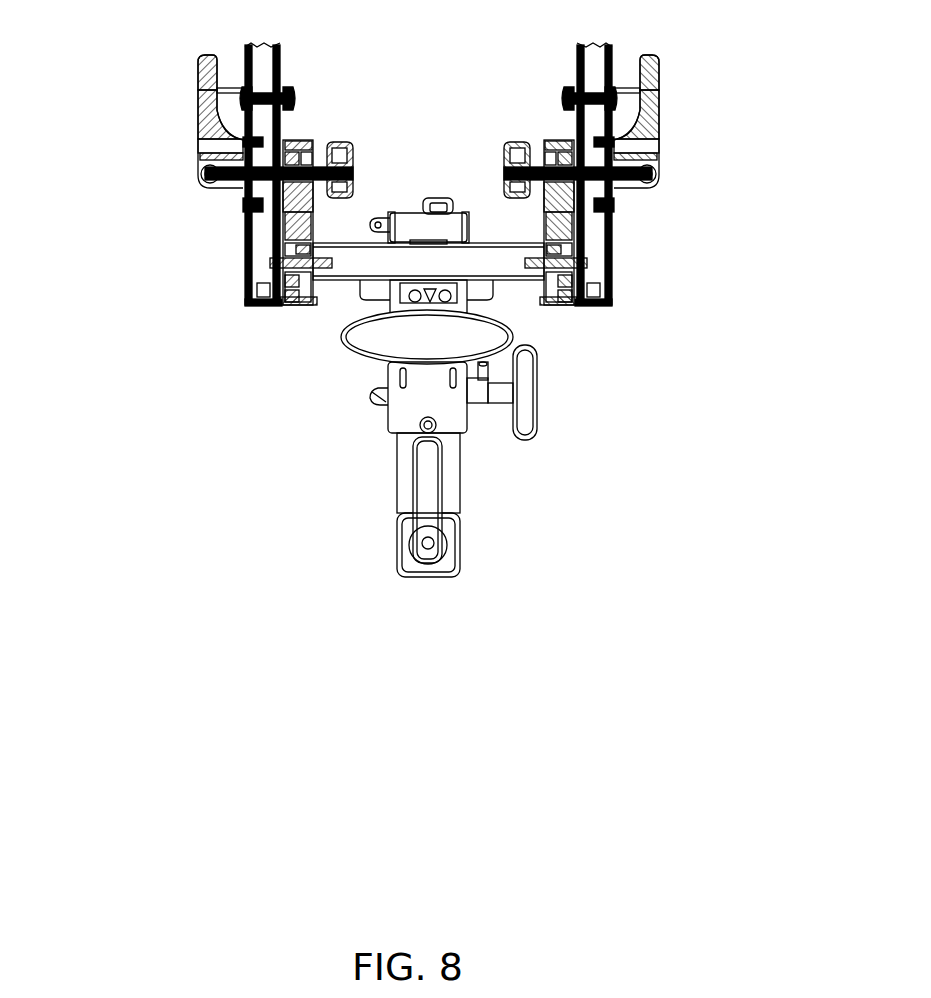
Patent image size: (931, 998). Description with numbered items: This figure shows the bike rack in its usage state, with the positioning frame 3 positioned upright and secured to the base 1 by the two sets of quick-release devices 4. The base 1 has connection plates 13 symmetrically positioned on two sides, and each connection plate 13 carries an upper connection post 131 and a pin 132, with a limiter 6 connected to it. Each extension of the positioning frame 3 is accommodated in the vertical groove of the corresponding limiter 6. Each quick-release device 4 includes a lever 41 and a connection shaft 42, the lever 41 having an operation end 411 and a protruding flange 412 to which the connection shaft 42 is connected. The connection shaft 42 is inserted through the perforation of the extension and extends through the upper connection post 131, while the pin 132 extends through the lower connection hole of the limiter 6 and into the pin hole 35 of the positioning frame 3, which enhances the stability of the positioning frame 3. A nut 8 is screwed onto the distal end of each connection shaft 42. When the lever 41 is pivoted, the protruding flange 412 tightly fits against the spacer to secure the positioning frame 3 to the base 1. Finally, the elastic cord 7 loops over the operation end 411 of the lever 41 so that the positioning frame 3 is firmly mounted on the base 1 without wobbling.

The base 1 is at (383, 288).
The positioning frame 3 is at (270, 77).
The quick-release device 4 is at (200, 155).
The lever 41 is at (197, 122).
The operation end 411 is at (205, 63).
The protruding flange 412 is at (233, 187).
The connection shaft 42 is at (247, 212).
The limiter 6 is at (314, 213).
The elastic cord 7 is at (197, 90).
The nut 8 is at (335, 143).
The connection plate 13 is at (316, 148).
The upper connection post 131 is at (300, 143).
The pin 132 is at (305, 302).
The pin hole 35 is at (270, 260).